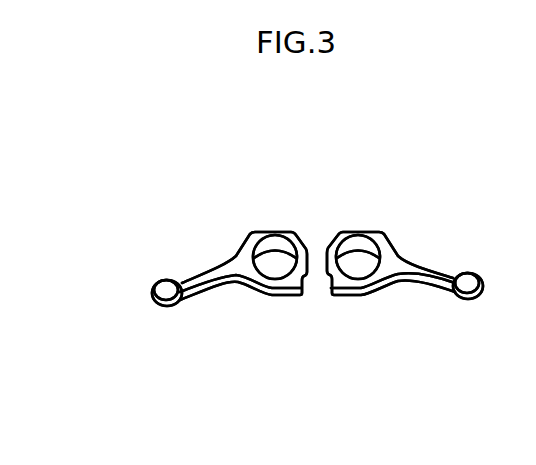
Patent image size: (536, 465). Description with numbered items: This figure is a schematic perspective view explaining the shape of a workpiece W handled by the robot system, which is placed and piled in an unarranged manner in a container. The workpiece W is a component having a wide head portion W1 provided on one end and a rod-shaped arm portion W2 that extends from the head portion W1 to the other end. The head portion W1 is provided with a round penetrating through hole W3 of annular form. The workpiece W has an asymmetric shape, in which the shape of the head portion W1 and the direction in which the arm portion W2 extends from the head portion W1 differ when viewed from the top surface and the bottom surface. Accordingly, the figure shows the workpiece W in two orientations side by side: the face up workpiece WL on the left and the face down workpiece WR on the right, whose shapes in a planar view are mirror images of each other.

The workpiece W is at (114, 185).
The face up workpiece WL is at (236, 198).
The face down workpiece WR is at (449, 331).
The head portion W1 is at (363, 247).
The arm portion W2 is at (443, 275).
The through hole W3 is at (355, 250).